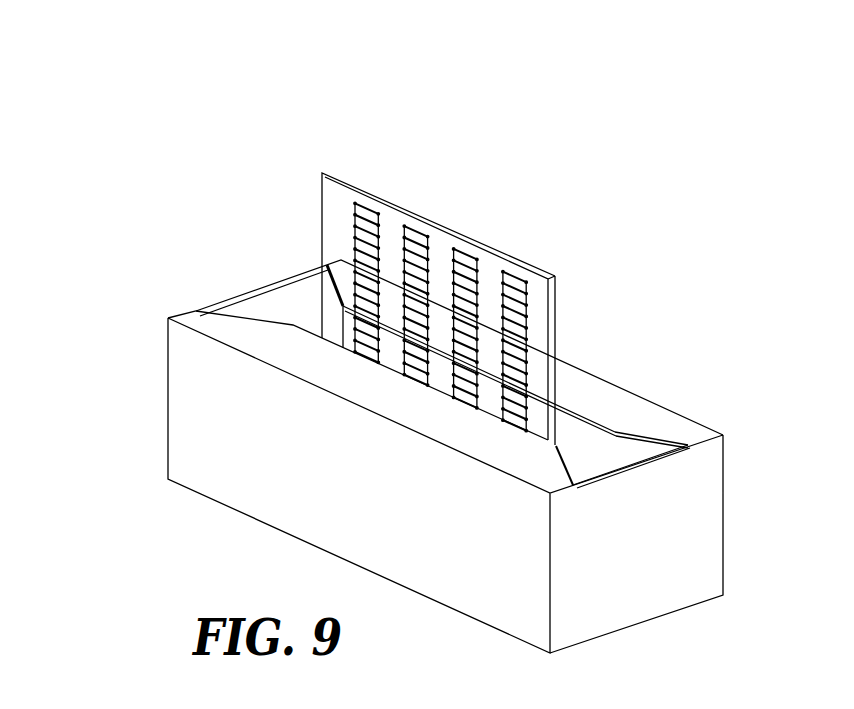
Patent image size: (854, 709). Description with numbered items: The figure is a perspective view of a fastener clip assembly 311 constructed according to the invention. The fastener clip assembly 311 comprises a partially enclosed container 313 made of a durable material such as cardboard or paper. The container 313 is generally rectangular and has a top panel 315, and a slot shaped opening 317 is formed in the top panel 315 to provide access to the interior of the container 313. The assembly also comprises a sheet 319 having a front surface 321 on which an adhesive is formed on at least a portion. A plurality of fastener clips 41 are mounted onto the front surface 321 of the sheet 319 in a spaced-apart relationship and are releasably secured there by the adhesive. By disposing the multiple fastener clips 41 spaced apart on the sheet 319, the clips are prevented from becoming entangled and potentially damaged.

The fastener clips 41 is at (520, 274).
The fastener clip assembly 311 is at (198, 520).
The partially enclosed container 313 is at (147, 435).
The top panel 315 is at (650, 422).
The slot shaped opening 317 is at (573, 433).
The sheet 319 is at (557, 293).
The front surface 321 is at (330, 217).